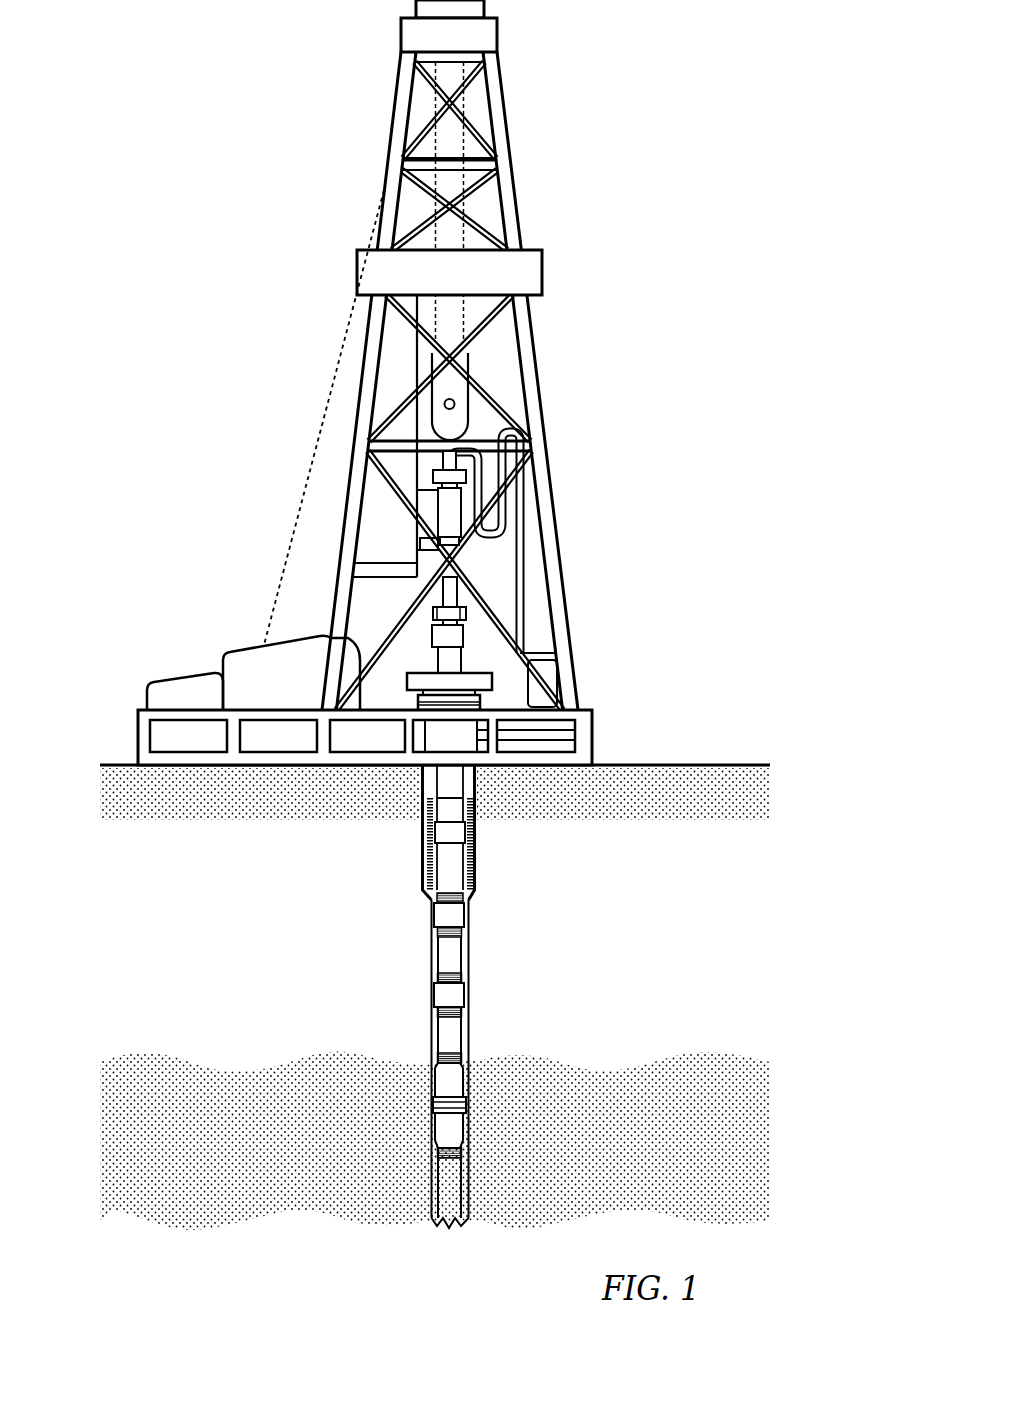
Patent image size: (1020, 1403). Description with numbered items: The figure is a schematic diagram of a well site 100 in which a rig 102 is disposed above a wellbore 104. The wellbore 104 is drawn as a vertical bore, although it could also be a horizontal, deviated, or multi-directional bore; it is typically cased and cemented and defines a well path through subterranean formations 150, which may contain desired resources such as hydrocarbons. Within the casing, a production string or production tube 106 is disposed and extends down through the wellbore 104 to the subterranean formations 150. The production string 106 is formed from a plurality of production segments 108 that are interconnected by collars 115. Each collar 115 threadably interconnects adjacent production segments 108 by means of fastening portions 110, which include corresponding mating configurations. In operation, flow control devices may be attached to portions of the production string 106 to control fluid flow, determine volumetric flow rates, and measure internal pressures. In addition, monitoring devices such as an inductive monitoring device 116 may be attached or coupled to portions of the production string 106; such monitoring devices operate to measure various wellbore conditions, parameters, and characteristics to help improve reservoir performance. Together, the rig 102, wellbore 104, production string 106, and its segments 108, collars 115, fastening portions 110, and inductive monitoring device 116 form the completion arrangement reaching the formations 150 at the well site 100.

The well site 100 is at (732, 27).
The rig 102 is at (508, 184).
The wellbore 104 is at (432, 919).
The production string 106 is at (436, 953).
The production segment 108 is at (457, 958).
The fastening portion 110 is at (456, 978).
The collar 115 is at (458, 917).
The inductive monitoring device 116 is at (459, 1075).
The subterranean formations 150 is at (672, 1148).